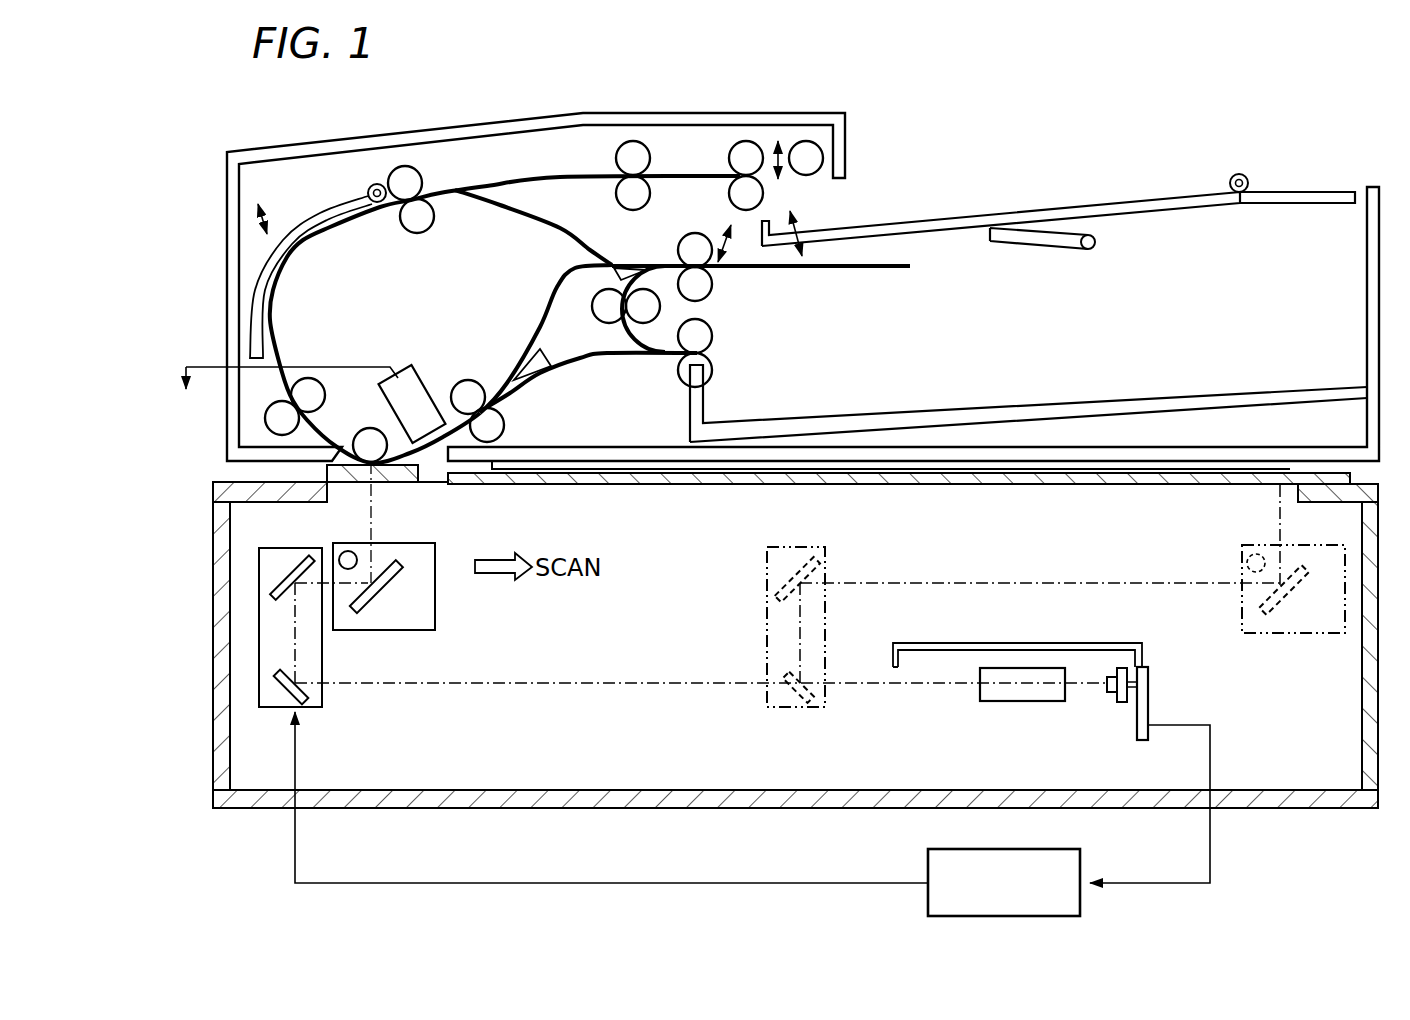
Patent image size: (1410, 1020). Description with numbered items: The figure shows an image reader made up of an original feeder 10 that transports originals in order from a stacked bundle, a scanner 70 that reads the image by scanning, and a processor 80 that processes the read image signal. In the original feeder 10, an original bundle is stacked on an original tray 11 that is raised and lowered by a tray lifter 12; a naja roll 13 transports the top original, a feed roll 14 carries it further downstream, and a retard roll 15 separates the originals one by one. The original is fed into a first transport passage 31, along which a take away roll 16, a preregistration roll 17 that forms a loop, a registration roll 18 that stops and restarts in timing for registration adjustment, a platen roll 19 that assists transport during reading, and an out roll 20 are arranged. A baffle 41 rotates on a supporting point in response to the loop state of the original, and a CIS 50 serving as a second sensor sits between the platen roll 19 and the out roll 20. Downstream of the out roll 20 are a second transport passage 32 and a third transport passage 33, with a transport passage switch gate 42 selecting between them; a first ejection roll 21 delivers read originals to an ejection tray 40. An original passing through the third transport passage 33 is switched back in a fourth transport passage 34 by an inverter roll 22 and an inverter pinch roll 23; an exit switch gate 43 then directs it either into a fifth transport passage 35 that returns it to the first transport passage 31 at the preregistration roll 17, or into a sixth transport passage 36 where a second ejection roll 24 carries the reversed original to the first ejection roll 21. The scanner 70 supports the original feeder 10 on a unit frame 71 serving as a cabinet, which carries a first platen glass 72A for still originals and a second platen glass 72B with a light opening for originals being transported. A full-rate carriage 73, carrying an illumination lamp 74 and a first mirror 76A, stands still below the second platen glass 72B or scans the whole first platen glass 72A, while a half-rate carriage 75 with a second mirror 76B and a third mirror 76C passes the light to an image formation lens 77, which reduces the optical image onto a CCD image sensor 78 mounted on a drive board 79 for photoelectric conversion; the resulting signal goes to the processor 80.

The original feeder 10 is at (1024, 116).
The original tray 11 is at (930, 218).
The tray lifter 12 is at (1030, 238).
The naja roll 13 is at (823, 158).
The feed roll 14 is at (746, 141).
The retard roll 15 is at (763, 193).
The take away roll 16 is at (617, 161).
The preregistration roll 17 is at (433, 233).
The registration roll 18 is at (312, 378).
The platen roll 19 is at (371, 428).
The out roll 20 is at (470, 380).
The first ejection roll 21 is at (715, 334).
The inverter roll 22 is at (713, 284).
The inverter pinch roll 23 is at (694, 234).
The second ejection roll 24 is at (605, 326).
The first transport passage 31 is at (512, 176).
The second transport passage 32 is at (648, 340).
The third transport passage 33 is at (548, 300).
The fourth transport passage 34 is at (867, 270).
The fifth transport passage 35 is at (562, 229).
The sixth transport passage 36 is at (631, 345).
The ejection tray 40 is at (1097, 392).
The baffle 41 is at (313, 205).
The transport passage switch gate 42 is at (540, 378).
The exit switch gate 43 is at (633, 266).
The CIS (Contact Image Sensor) 50 is at (413, 367).
The scanner 70 is at (1302, 845).
The unit frame 71 is at (1248, 810).
The first platen glass 72A is at (1000, 484).
The second platen glass 72B is at (402, 484).
The full-rate carriage 73 is at (435, 612).
The illumination lamp 74 is at (348, 550).
The half-rate carriage 75 is at (322, 661).
The first mirror 76A is at (400, 565).
The second mirror 76B is at (290, 565).
The third mirror 76C is at (283, 690).
The image formation lens 77 is at (1000, 702).
The CCD image sensor 78 is at (1113, 697).
The drive board 79 is at (1150, 702).
The processor 80 is at (928, 862).